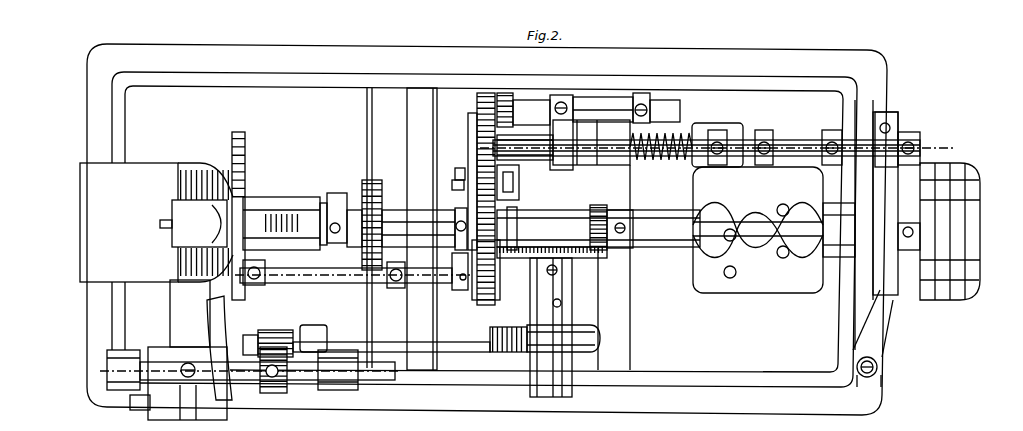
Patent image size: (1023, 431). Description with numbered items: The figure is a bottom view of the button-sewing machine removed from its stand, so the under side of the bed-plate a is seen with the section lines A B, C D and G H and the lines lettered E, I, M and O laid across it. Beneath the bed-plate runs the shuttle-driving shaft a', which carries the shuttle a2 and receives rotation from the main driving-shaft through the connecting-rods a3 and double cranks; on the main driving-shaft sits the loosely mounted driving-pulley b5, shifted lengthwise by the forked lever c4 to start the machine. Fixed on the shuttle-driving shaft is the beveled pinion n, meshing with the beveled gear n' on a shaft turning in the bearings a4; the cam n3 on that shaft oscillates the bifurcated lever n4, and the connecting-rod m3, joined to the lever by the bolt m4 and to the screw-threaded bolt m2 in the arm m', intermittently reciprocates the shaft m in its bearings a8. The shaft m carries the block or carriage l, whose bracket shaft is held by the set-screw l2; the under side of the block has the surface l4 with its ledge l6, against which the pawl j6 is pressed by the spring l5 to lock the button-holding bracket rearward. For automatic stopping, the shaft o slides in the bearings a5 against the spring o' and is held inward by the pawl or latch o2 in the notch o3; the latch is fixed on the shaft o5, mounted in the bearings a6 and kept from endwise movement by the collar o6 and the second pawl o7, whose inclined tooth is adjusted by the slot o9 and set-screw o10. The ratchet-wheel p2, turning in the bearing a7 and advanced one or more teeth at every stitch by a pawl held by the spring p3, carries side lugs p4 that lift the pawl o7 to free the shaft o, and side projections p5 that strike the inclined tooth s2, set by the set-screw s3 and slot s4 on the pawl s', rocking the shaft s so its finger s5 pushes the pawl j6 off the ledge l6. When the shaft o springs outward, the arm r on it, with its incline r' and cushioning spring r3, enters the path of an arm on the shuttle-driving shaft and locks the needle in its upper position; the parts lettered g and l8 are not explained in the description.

The bed-plate a is at (487, 229).
The shuttle-driving shaft a' is at (708, 235).
The shuttle a2 is at (218, 190).
The connecting-rods a3 is at (758, 230).
The bearings a4 is at (551, 327).
The bearings a5 is at (846, 134).
The bearings a6 is at (581, 131).
The bearing a7 is at (525, 147).
The bearings a8 is at (232, 370).
The section line M N M is at (229, 200).
The section line E F E is at (450, 430).
The section line G H G is at (496, 130).
The section line I J I is at (853, 430).
The section line A B A is at (470, 148).
The section line A B is at (925, 148).
The section line C D C is at (470, 322).
The section line C D is at (470, 323).
The section line G H is at (530, 215).
The ratchet-wheel p2 is at (487, 92).
The spring p3 is at (482, 226).
The side lugs p4 is at (505, 92).
The side projections p5 is at (471, 113).
The shaft o is at (717, 144).
The spring o' is at (666, 169).
The pawl or latch o2 is at (566, 165).
The notch o3 is at (585, 165).
The shaft o5 is at (600, 97).
The collar o6 is at (646, 133).
The second pawl o7 is at (556, 94).
The slot o9 is at (517, 188).
The set-screw o10 is at (515, 178).
The rock-shaft s is at (352, 274).
The pawl s' is at (460, 270).
The inclined tooth s2 is at (462, 147).
The set-screw s3 is at (456, 178).
The slot s4 is at (456, 168).
The finger s5 is at (185, 323).
The driving-pulley b5 is at (456, 187).
The beveled pinion n is at (605, 267).
The beveled gear n' is at (552, 263).
The cam n3 is at (563, 338).
The bifurcated lever n4 is at (599, 342).
The shaft m is at (243, 373).
The arm m' is at (271, 359).
The screw-threaded bolt m2 is at (355, 342).
The connecting-rod m3 is at (392, 345).
The bolt m4 is at (510, 322).
The block or carriage l is at (250, 383).
The set-screw l2 is at (172, 293).
The surface l4 is at (222, 295).
The spring l5 is at (219, 348).
The ledge l6 is at (202, 305).
The lever l8 is at (165, 412).
The pawl j6 is at (230, 381).
The section line O P O is at (190, 313).
The arm r is at (893, 225).
The incline r' is at (904, 300).
The spring r3 is at (876, 304).
The lever c4 is at (880, 200).
The hand wheel g is at (913, 285).